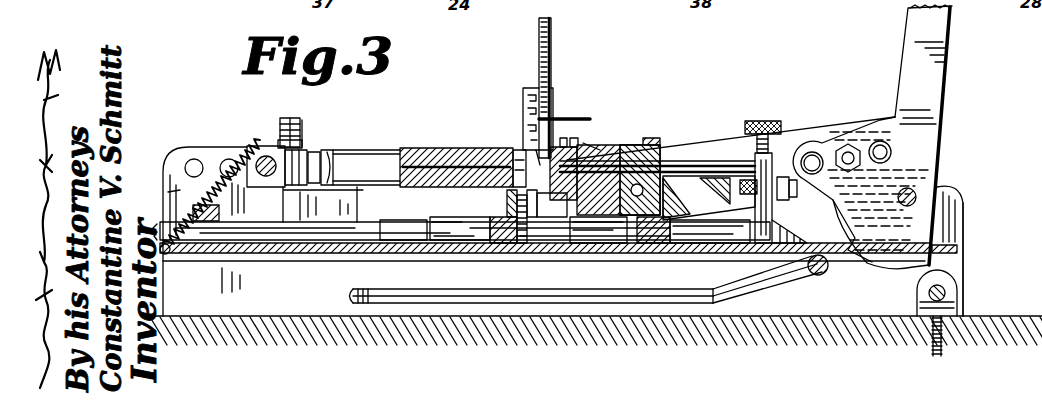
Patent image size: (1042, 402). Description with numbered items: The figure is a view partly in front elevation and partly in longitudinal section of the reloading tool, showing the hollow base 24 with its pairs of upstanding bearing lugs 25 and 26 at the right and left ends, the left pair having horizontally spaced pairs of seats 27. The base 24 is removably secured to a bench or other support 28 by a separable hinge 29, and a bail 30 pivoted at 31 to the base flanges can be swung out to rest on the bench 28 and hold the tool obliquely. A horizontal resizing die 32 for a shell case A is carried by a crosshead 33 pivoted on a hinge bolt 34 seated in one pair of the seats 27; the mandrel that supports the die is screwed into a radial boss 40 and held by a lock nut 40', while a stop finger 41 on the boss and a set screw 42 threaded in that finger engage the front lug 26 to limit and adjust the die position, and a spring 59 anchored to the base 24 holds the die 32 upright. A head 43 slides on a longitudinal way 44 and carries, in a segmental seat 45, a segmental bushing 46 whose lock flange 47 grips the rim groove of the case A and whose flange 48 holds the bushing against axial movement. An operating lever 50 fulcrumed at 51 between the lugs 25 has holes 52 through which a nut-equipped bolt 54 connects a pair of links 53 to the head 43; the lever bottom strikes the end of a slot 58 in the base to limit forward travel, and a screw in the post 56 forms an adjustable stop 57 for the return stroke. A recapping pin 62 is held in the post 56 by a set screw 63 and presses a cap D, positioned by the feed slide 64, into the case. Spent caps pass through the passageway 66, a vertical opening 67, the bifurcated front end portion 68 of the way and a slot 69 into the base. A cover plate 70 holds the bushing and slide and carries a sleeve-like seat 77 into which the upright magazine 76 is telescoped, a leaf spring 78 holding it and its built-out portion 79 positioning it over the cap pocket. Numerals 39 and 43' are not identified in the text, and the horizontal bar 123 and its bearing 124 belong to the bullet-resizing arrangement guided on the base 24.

The hollow base 24 is at (282, 255).
The bearing 124 is at (215, 248).
The bearing lugs 25 is at (955, 203).
The bearing lugs 26 is at (175, 170).
The seats 27 is at (198, 160).
The bench or other support 28 is at (1005, 328).
The separable hinge 29 is at (955, 290).
The bail 30 is at (716, 292).
The pivot 31 is at (344, 300).
The resizing die 32 is at (392, 150).
The crosshead 33 is at (255, 145).
The hinge bolt 34 is at (305, 184).
The nut 39 is at (336, 158).
The radial boss 40 is at (314, 139).
The lock nut 40' is at (329, 149).
The stop finger 41 is at (303, 118).
The set screw 42 is at (282, 118).
The head 43 is at (626, 166).
The block portion 43' is at (587, 160).
The longitudinal way 44 is at (700, 232).
The segmental seat 45 is at (473, 230).
The segmental bushing 46 is at (512, 194).
The segmental lock flange 47 is at (593, 193).
The segmental flange 48 is at (545, 205).
The operating lever 50 is at (908, 64).
The fulcrum 51 is at (933, 197).
The holes 52 is at (870, 148).
The links 53 is at (797, 147).
The nut-equipped bolt 54 is at (901, 189).
The post 56 is at (760, 210).
The adjustable stop 57 is at (722, 186).
The slot 58 is at (845, 253).
The spring 59 is at (178, 190).
The recapping pin 62 is at (673, 165).
The set screw 63 is at (763, 118).
The feed slide 64 is at (565, 137).
The passageway 66 is at (537, 157).
The vertical opening 67 is at (578, 147).
The bifurcated front end portion 68 is at (552, 235).
The slot 69 is at (612, 243).
The cover plate 70 is at (583, 143).
The magazine 76 is at (553, 35).
The sleeve-like seat 77 is at (547, 120).
The leaf spring 78 is at (557, 150).
The built-out portion 79 is at (528, 87).
The horizontal bar 123 is at (397, 232).
The shell case A is at (520, 155).
The cap D is at (549, 88).